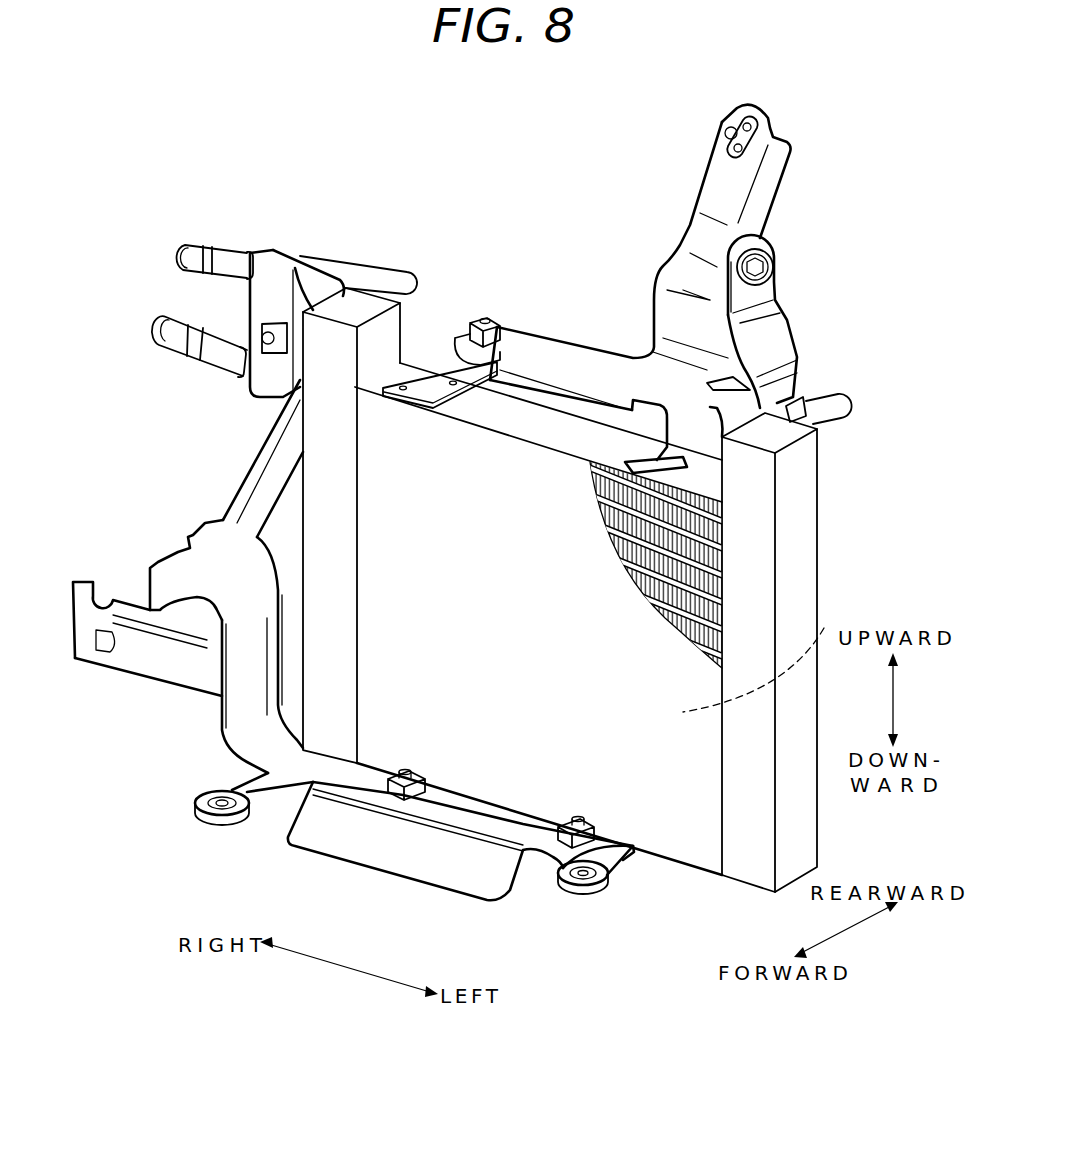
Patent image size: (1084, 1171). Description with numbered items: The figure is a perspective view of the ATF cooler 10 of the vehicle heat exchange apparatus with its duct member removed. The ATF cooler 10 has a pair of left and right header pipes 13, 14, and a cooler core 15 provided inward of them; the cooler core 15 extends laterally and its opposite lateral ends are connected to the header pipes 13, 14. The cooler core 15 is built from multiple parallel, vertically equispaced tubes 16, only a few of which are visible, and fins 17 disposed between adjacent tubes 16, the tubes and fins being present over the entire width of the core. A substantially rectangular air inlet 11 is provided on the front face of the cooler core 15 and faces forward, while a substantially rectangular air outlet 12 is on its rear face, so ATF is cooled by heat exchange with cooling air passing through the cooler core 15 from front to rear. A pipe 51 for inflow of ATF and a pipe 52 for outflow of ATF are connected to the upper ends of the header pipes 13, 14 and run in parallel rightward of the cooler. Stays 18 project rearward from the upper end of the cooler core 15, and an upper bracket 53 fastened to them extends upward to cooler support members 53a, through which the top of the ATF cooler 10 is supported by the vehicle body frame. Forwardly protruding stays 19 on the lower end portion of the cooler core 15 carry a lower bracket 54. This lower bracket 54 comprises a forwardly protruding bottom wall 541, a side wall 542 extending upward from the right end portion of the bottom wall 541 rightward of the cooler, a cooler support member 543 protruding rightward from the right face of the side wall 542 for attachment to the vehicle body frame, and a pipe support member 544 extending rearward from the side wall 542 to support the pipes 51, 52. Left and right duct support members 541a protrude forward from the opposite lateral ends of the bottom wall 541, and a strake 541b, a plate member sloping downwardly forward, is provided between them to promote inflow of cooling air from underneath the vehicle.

The ATF cooler 10 is at (712, 878).
The air inlet 11 is at (510, 833).
The air outlet 12 is at (824, 628).
The header pipe 13 is at (820, 800).
The header pipe 14 is at (318, 481).
The cooler core 15 is at (396, 735).
The tubes 16 is at (650, 550).
The fins 17 is at (632, 570).
The stays 18 is at (438, 372).
The stays 19 is at (638, 850).
The pipe 51 is at (207, 353).
The pipe 52 is at (233, 257).
The upper bracket 53 is at (782, 318).
The cooler support members 53a is at (722, 241).
The lower bracket 54 is at (210, 738).
The bottom wall 541 is at (552, 733).
The duct support members 541a is at (253, 788).
The strake 541b is at (367, 850).
The side wall 542 is at (213, 700).
The cooler support member 543 is at (92, 652).
The pipe support member 544 is at (262, 457).